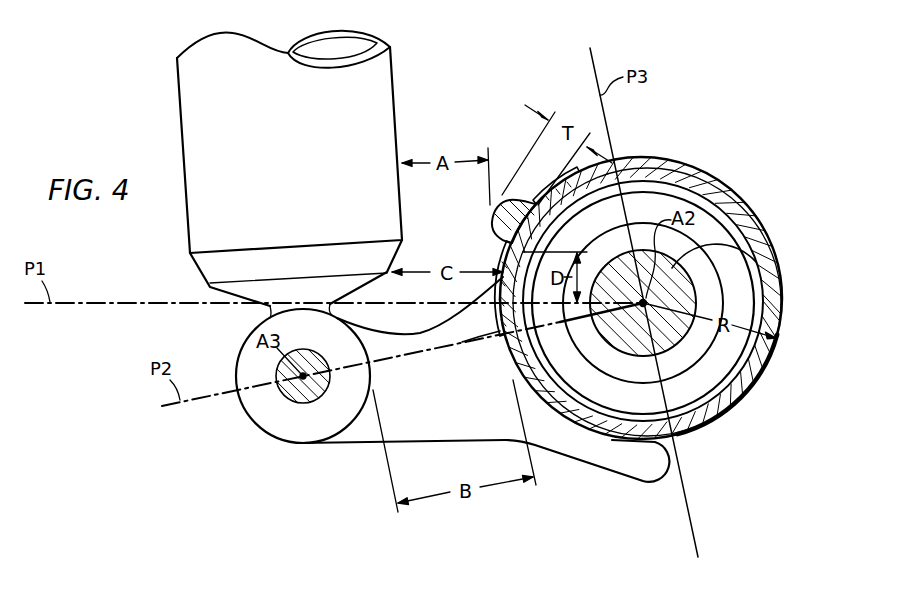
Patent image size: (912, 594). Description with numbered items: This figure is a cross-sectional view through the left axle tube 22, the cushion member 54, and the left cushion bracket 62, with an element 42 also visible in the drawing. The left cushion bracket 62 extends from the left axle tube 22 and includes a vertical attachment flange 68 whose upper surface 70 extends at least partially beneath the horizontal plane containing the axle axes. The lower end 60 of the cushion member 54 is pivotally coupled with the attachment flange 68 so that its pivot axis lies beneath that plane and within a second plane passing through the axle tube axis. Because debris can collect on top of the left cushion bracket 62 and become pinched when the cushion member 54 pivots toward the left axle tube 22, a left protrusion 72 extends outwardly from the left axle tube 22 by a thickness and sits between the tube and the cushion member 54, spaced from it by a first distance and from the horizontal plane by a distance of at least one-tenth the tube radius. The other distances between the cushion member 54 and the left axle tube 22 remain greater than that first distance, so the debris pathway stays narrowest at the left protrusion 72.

The left axle tube 22 is at (780, 314).
The cam ring 42 is at (744, 243).
The cushion member 54 is at (178, 108).
The lower end 60 is at (246, 430).
The left cushion bracket 62 is at (570, 488).
The vertical attachment flange 68 is at (362, 443).
The upper surface 70 is at (503, 280).
The left protrusion 72 is at (492, 210).